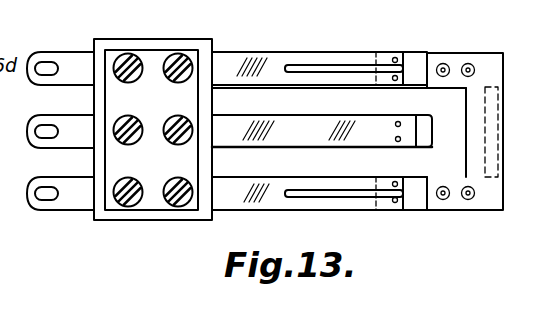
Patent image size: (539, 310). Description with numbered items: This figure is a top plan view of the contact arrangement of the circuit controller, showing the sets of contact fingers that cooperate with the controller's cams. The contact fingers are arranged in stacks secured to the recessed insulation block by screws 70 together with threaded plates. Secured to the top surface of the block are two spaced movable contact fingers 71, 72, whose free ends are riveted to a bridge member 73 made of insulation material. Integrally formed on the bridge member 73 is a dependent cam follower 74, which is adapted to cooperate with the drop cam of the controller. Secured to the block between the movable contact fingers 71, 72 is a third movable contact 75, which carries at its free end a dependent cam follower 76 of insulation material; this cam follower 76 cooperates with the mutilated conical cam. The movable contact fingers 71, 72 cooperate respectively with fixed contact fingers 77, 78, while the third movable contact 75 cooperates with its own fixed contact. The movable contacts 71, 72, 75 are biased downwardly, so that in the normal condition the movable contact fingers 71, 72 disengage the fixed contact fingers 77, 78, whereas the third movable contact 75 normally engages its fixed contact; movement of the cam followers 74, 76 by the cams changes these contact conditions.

The screws 70 is at (172, 178).
The movable contact finger 71 is at (417, 183).
The movable contact finger 72 is at (409, 60).
The bridge member 73 is at (475, 63).
The dependent cam follower 74 is at (493, 173).
The third movable contact 75 is at (377, 103).
The dependent cam follower 76 is at (422, 123).
The fixed contact finger 77 is at (383, 183).
The fixed contact finger 78 is at (391, 55).